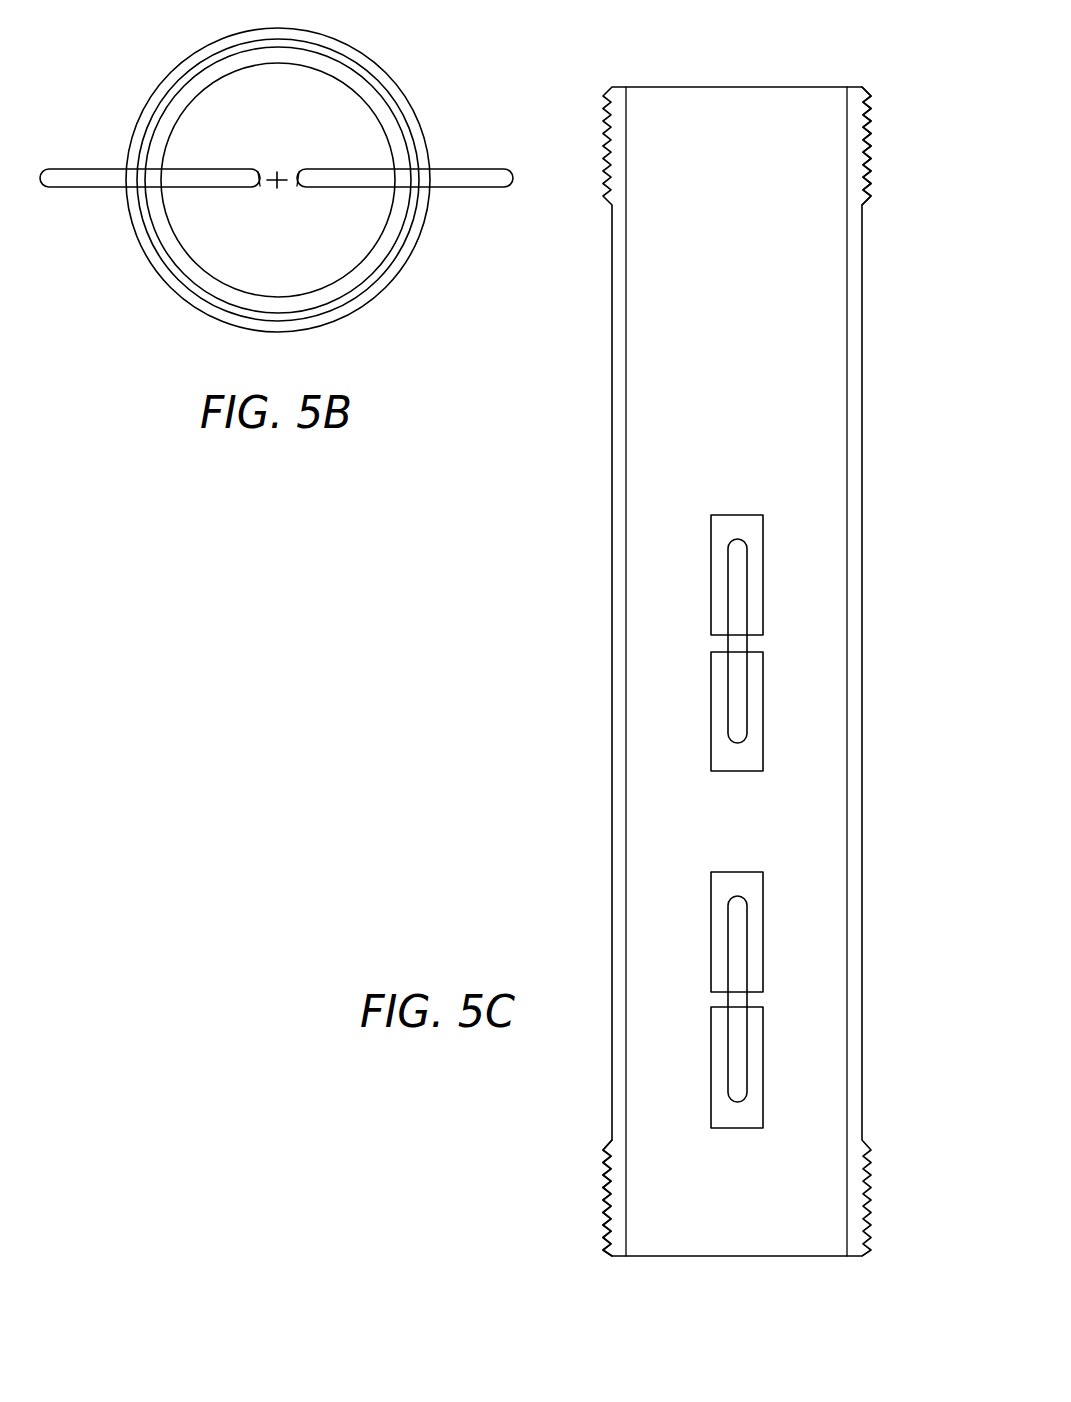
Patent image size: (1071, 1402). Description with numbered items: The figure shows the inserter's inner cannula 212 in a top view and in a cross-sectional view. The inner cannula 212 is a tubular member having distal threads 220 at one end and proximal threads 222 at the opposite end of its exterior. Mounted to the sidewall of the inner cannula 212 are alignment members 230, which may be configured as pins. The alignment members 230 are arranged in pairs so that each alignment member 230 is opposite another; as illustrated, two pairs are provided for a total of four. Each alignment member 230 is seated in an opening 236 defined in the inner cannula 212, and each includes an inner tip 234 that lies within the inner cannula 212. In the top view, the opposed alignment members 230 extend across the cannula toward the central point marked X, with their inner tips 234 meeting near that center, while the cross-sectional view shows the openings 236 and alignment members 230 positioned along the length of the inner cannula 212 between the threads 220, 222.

In FIG. 5C, the inner cannula 212 is at (618, 87).
In FIG. 5C, the proximal threads 222 is at (870, 150).
In FIG. 5C, the distal threads 220 is at (603, 1200).
In FIG. 5B, the alignment member 230 is at (69, 168).
In FIG. 5C, the alignment member 230 is at (747, 586).
In FIG. 5B, the inner tip 234 is at (262, 188).
In FIG. 5C, the opening 236 is at (716, 526).
In FIG. 5B, the central axis X is at (282, 174).